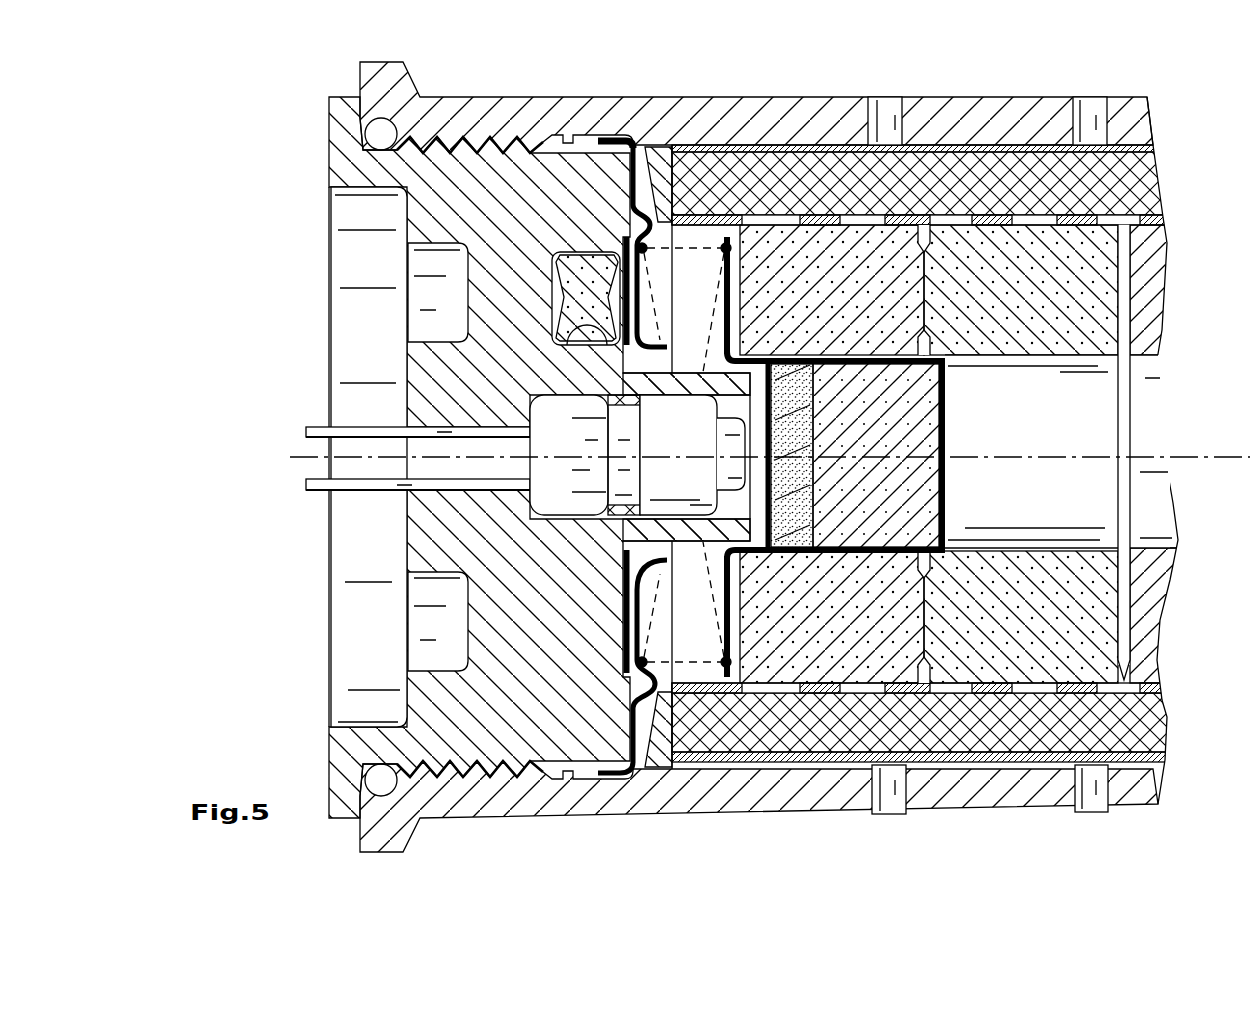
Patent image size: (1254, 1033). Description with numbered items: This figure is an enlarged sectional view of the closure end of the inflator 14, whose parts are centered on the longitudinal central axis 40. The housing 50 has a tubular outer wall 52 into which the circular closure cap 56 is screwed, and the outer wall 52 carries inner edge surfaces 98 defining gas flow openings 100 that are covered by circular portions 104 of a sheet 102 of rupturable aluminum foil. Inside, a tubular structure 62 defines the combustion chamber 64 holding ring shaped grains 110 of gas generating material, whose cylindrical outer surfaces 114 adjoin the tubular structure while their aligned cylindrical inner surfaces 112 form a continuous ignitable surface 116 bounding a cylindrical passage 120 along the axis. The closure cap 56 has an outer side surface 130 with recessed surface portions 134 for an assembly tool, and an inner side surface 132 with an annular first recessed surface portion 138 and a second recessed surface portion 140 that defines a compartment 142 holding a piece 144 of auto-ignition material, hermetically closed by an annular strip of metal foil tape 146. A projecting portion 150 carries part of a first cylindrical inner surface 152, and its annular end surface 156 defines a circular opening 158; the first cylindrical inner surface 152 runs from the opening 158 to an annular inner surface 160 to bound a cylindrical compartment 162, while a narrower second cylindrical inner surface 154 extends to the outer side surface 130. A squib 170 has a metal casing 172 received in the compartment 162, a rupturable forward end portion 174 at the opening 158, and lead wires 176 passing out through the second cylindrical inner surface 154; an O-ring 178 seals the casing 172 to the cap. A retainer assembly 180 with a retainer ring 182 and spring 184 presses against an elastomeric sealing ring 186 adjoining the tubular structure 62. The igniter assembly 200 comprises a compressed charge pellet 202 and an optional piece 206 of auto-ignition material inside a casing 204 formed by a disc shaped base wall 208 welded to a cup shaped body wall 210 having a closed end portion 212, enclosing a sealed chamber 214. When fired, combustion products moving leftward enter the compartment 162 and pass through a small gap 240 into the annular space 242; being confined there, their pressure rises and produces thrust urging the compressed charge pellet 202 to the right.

The inflator 14 is at (333, 53).
The longitudinal central axis 40 is at (383, 457).
The housing 50 is at (488, 90).
The tubular outer wall 52 is at (558, 105).
The closure cap 56 is at (333, 152).
The tubular structure 62 is at (803, 160).
The combustion chamber 64 is at (1032, 298).
The inner edge surfaces 98 is at (905, 105).
The gas flow openings 100 is at (894, 93).
The sheet of rupturable pressure controlling material 102 is at (1160, 149).
The circular portions 104 is at (888, 140).
The grains 110 is at (843, 643).
The cylindrical inner surface 112 is at (890, 546).
The cylindrical outer surface 114 is at (903, 680).
The ignitable surface 116 is at (1154, 414).
The cylindrical passage 120 is at (1092, 427).
The outer side surface 130 is at (329, 768).
The inner side surface 132 is at (636, 700).
The recessed surface portions 134 is at (435, 347).
The first recessed surface portion 138 is at (643, 626).
The second recessed surface portion 140 is at (654, 447).
The compartment 142 is at (603, 306).
The piece of auto-ignition material 144 is at (600, 262).
The metal foil tape 146 is at (629, 636).
The projecting portion 150 is at (762, 340).
The first cylindrical inner surface 152 is at (550, 512).
The second cylindrical inner surface 154 is at (450, 488).
The annular end surface 156 is at (786, 368).
The circular opening 158 is at (792, 406).
The annular inner surface 160 is at (540, 505).
The cylindrical compartment 162 is at (696, 444).
The squib 170 is at (543, 383).
The casing 172 is at (543, 412).
The rupturable forward end portion 174 is at (771, 458).
The lead wires 176 is at (322, 484).
The O-ring 178 is at (624, 520).
The retainer assembly 180 is at (650, 162).
The retainer ring 182 is at (607, 137).
The spring 184 is at (675, 175).
The sealing ring 186 is at (700, 248).
The igniter assembly 200 is at (950, 388).
The compressed charge pellet 202 is at (920, 400).
The casing 204 is at (948, 427).
The piece of auto-ignition material 206 is at (802, 530).
The base wall 208 is at (745, 463).
The body wall 210 is at (945, 473).
The closed end portion 212 is at (945, 500).
The chamber 214 is at (918, 445).
The gap 240 is at (718, 366).
The annular space 242 is at (716, 275).